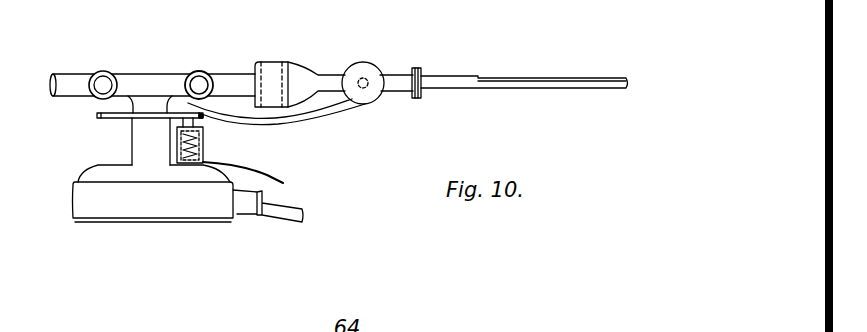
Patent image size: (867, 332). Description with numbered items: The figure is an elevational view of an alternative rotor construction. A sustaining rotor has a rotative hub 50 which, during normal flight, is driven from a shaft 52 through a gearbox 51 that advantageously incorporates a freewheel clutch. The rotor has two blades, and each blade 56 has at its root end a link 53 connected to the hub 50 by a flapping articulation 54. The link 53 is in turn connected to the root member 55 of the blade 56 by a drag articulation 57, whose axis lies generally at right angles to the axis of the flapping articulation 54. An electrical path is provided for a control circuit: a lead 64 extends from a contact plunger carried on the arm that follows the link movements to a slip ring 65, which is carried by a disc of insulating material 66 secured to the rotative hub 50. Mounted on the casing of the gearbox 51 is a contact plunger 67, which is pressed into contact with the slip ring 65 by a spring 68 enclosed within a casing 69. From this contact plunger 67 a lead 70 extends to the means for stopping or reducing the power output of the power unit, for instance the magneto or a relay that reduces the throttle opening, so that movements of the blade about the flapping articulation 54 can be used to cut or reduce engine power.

The rotative hub 50 is at (150, 80).
The gearbox 51 is at (163, 203).
The shaft 52 is at (280, 210).
The link 53 is at (233, 78).
The flapping articulation 54 is at (197, 83).
The root member 55 is at (400, 85).
The blade 56 is at (523, 75).
The drag articulation 57 is at (270, 80).
The lead 64 is at (318, 111).
The slip ring 65 is at (204, 117).
The disc of insulating material 66 is at (116, 120).
The contact plunger 67 is at (173, 122).
The spring 68 is at (188, 156).
The casing 69 is at (180, 149).
The lead 70 is at (275, 178).